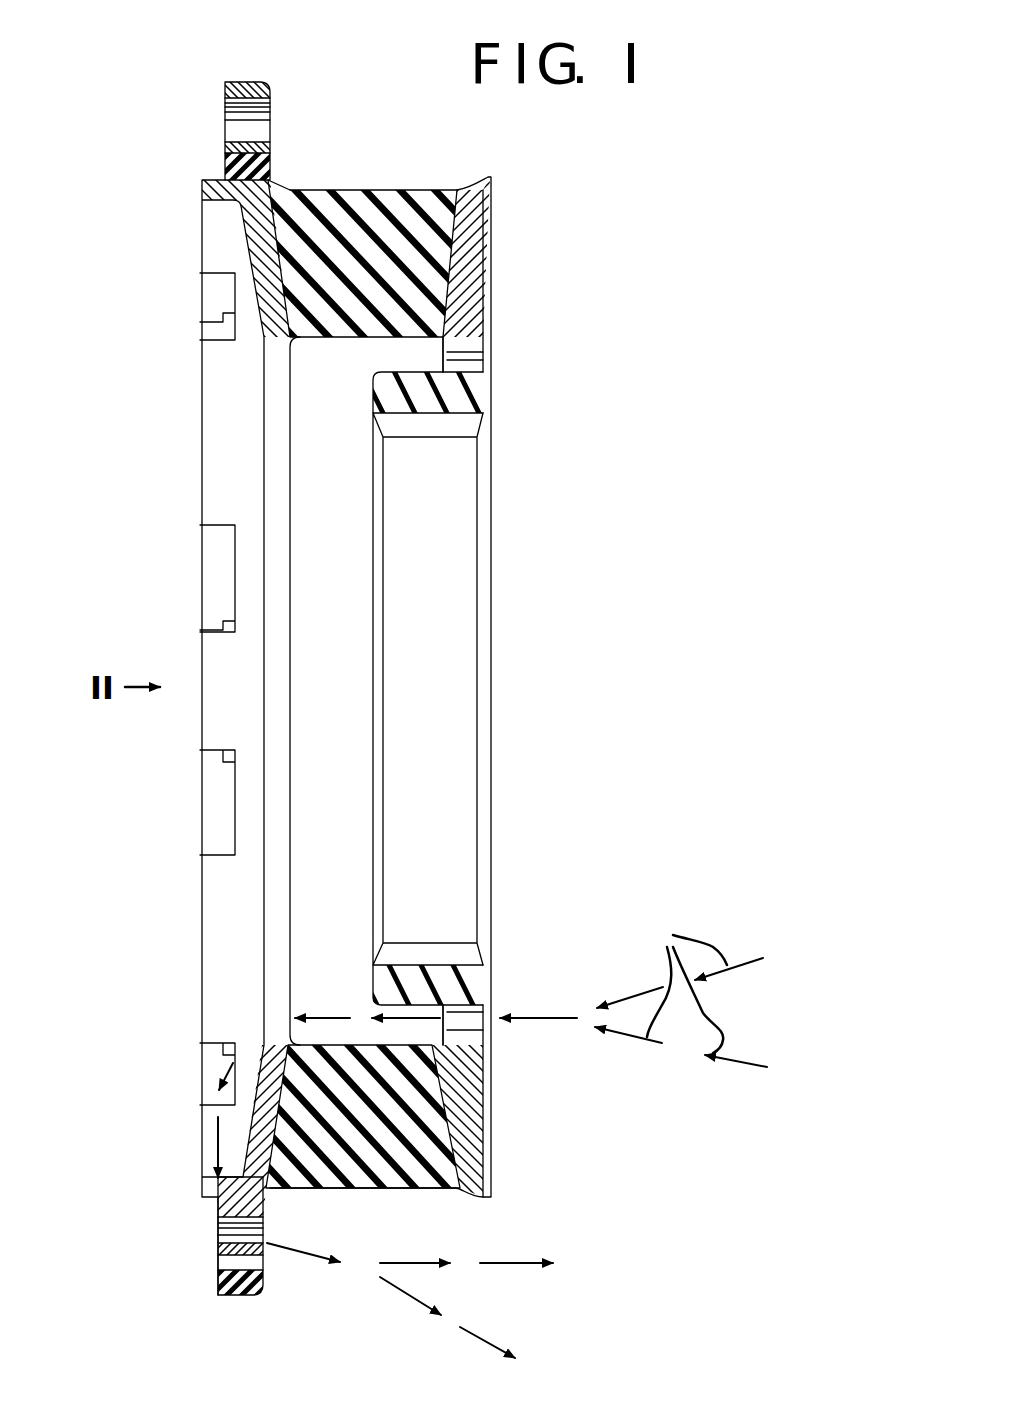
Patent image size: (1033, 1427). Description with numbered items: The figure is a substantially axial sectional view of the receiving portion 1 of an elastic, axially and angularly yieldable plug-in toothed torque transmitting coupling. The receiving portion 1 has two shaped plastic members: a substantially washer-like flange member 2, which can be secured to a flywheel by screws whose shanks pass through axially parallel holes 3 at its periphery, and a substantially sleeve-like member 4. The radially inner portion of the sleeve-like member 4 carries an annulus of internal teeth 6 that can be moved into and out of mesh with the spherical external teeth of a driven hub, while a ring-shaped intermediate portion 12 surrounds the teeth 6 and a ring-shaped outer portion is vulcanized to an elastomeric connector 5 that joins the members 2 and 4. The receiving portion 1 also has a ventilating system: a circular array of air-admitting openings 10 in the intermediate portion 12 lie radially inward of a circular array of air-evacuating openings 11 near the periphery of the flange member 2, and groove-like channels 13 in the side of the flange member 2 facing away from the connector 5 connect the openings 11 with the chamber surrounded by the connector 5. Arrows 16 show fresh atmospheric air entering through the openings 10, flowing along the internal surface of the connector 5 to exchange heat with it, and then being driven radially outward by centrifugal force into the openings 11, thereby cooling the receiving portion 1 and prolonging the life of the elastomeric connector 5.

The receiving portion 1 is at (505, 722).
The flange member 2 is at (240, 84).
The holes 3 is at (226, 140).
The sleeve-like member 4 is at (486, 290).
The elastomeric connector 5 is at (398, 188).
The internal teeth 6 is at (450, 438).
The air-admitting openings 10 is at (480, 358).
The air-evacuating openings 11 is at (237, 1257).
The intermediate portion 12 is at (440, 345).
The channels 13 is at (225, 1213).
The arrows 16 is at (640, 987).